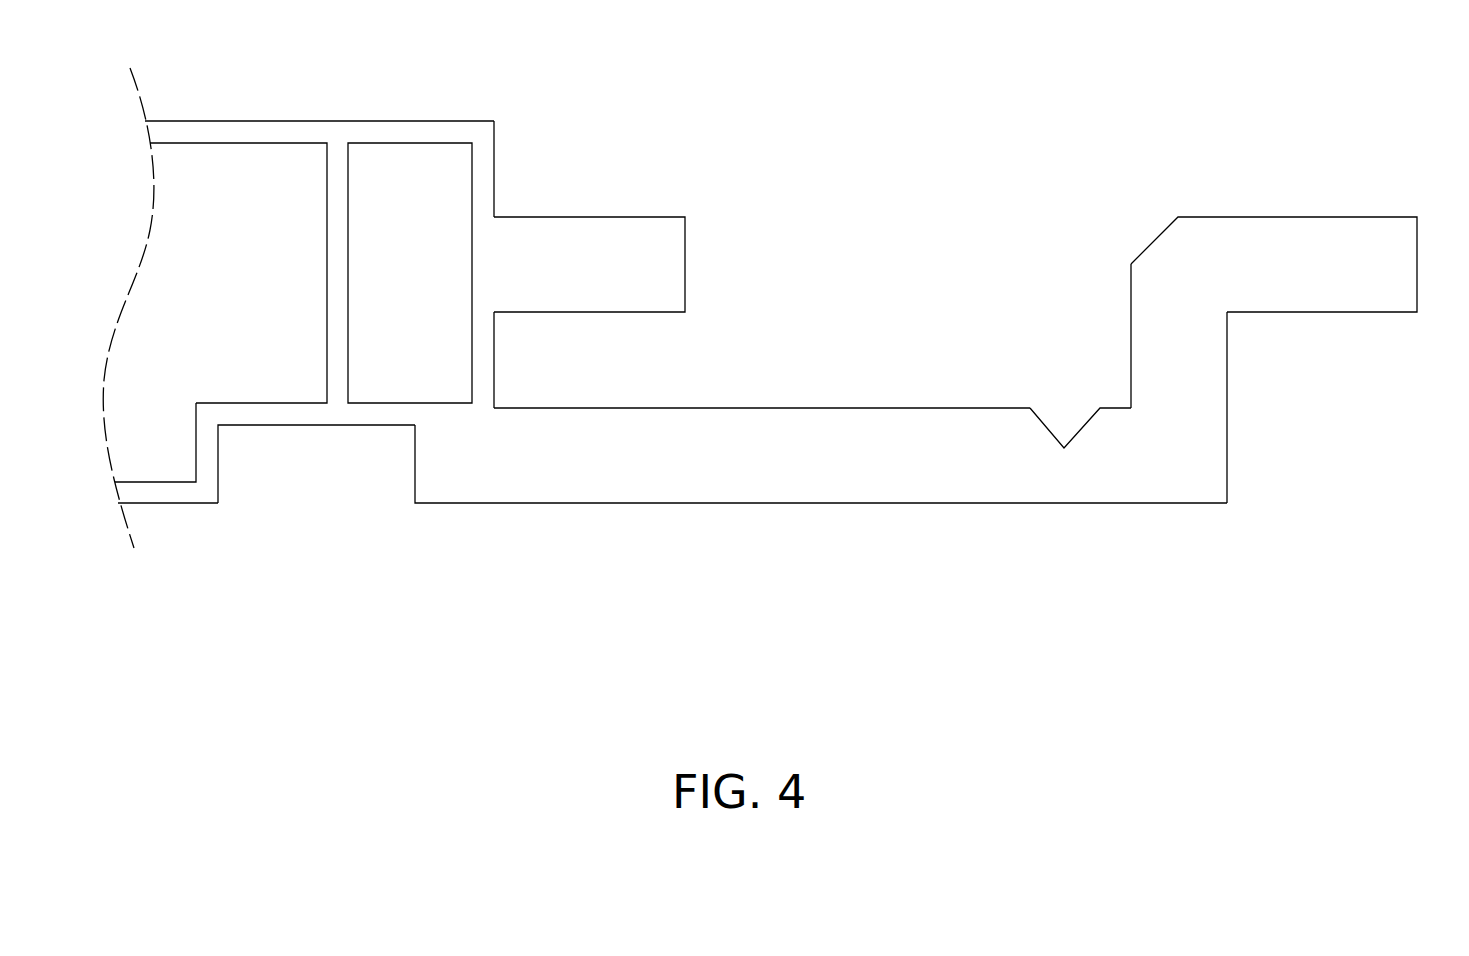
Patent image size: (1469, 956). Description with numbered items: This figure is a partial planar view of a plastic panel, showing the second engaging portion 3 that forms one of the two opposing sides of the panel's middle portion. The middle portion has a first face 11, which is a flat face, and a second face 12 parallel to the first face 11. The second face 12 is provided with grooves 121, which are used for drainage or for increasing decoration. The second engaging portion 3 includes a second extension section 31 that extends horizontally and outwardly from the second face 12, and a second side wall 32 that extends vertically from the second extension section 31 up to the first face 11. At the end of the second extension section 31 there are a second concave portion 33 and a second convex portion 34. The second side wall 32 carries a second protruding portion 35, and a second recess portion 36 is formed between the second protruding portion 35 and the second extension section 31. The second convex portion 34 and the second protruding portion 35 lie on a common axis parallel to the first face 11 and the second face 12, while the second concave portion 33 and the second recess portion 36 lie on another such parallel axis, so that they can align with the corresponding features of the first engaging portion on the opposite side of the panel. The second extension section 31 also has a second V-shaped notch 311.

The first face 11 is at (243, 119).
The second face 12 is at (162, 505).
The grooves 121 is at (218, 469).
The second engaging portion 3 is at (997, 588).
The second extension section 31 is at (802, 487).
The second side wall 32 is at (494, 168).
The second concave portion 33 is at (1253, 412).
The second convex portion 34 is at (1408, 262).
The second protruding portion 35 is at (668, 257).
The second recess portion 36 is at (613, 350).
The second V-shaped notch 311 is at (1057, 418).